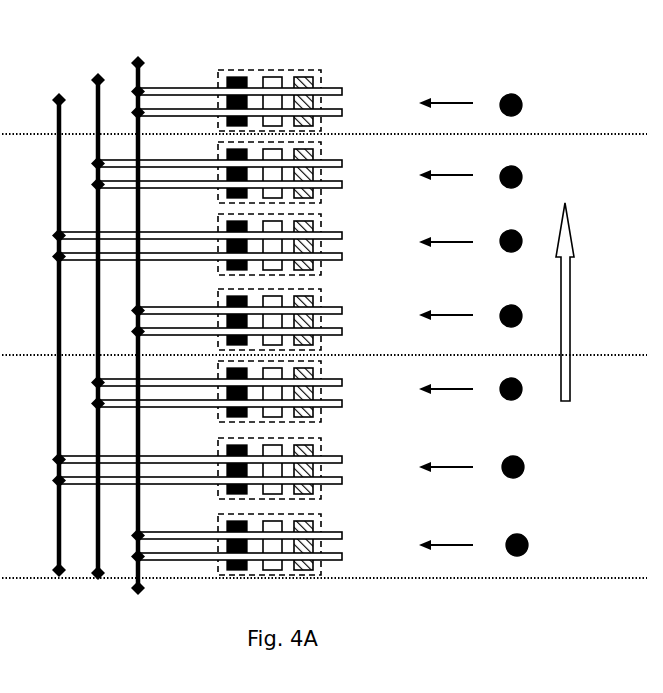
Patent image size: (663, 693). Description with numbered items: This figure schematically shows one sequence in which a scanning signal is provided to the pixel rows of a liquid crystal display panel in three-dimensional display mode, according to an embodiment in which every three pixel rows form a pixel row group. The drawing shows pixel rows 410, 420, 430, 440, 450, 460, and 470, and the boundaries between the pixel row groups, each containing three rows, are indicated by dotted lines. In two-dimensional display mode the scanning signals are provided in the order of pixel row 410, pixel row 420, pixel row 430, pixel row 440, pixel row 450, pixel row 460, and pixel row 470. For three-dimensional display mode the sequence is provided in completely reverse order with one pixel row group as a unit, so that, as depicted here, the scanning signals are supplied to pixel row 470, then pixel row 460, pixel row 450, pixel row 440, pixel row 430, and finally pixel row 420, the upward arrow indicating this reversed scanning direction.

The pixel row 410 is at (342, 92).
The pixel row 420 is at (342, 164).
The pixel row 430 is at (342, 236).
The pixel row 440 is at (342, 310).
The pixel row 450 is at (342, 382).
The pixel row 460 is at (342, 460).
The pixel row 470 is at (342, 536).